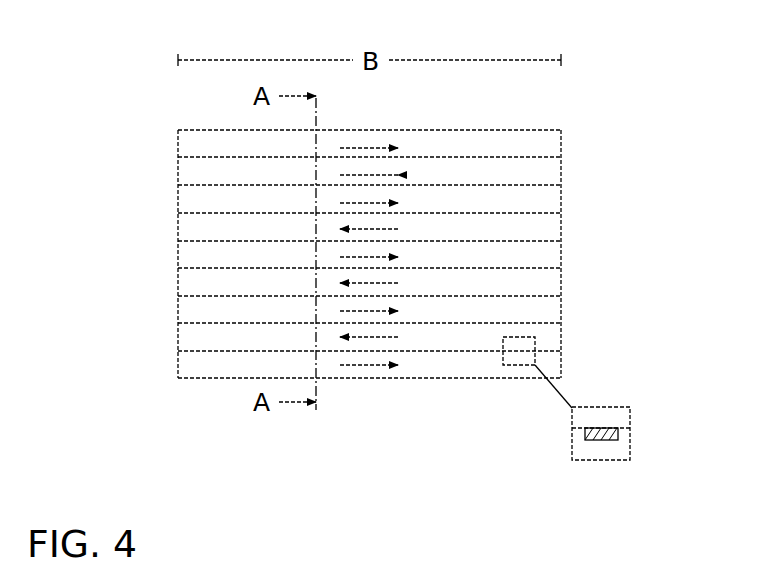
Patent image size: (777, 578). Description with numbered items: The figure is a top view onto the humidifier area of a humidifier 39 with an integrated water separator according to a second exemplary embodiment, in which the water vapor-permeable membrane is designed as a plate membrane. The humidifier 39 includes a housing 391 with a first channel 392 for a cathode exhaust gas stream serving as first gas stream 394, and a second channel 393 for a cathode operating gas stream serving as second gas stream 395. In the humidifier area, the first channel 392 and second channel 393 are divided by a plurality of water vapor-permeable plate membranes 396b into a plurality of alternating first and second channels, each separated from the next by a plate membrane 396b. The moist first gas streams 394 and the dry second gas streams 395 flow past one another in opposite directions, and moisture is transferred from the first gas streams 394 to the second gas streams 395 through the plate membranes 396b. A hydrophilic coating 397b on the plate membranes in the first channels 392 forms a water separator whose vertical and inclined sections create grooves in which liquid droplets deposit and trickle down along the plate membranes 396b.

The humidifier 39 is at (630, 98).
The housing 391 is at (192, 130).
The first channel 392 is at (513, 143).
The second channel 393 is at (191, 172).
The first gas stream 394 is at (362, 148).
The second gas stream 395 is at (384, 334).
The water vapor-permeable plate membrane 396b is at (193, 350).
The hydrophilic coating 397b is at (585, 440).